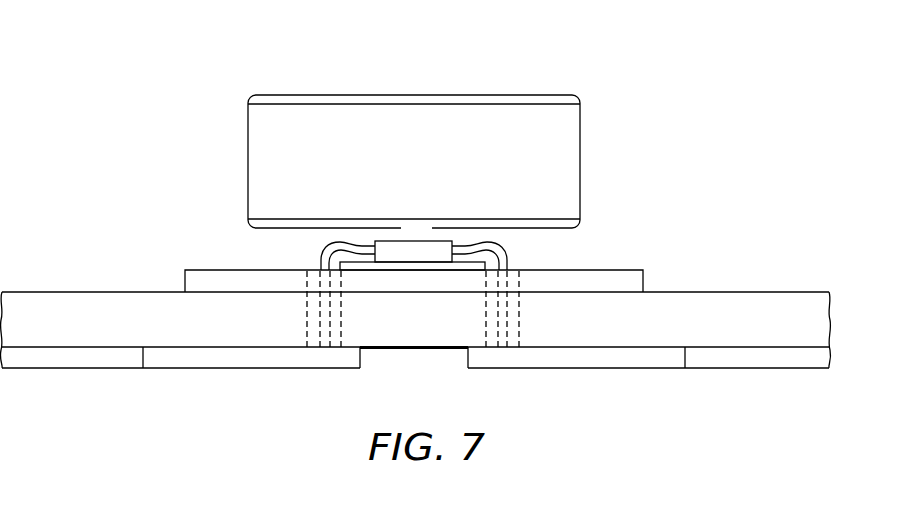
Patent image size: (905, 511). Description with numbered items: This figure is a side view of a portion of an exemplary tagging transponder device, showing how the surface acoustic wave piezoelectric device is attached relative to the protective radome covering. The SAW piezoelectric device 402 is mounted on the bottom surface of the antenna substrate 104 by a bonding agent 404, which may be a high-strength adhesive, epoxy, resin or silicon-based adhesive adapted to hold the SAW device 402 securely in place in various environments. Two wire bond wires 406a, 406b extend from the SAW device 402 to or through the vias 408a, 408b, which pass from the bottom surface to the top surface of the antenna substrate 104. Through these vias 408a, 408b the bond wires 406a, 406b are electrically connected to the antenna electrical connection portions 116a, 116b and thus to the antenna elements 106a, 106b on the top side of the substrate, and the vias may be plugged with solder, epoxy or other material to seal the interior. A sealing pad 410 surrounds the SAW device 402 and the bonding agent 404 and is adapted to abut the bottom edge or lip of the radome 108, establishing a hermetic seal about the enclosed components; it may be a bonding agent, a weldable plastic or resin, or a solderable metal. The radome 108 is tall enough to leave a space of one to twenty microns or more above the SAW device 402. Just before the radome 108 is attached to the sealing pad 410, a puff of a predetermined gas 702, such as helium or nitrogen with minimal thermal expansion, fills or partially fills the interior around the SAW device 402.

The antenna substrate 104 is at (728, 289).
The antenna element 106a is at (100, 370).
The antenna element 106b is at (712, 368).
The radome 108 is at (396, 79).
The antenna electrical connection portion 116a is at (217, 360).
The antenna electrical connection portion 116b is at (613, 360).
The SAW piezoelectric device 402 is at (420, 239).
The bonding agent 404 is at (400, 259).
The wire bond wire 406a is at (333, 244).
The wire bond wire 406b is at (478, 241).
The via 408a is at (313, 325).
The via 408b is at (517, 325).
The sealing pad 410 is at (199, 267).
The predetermined gas 702 is at (520, 242).